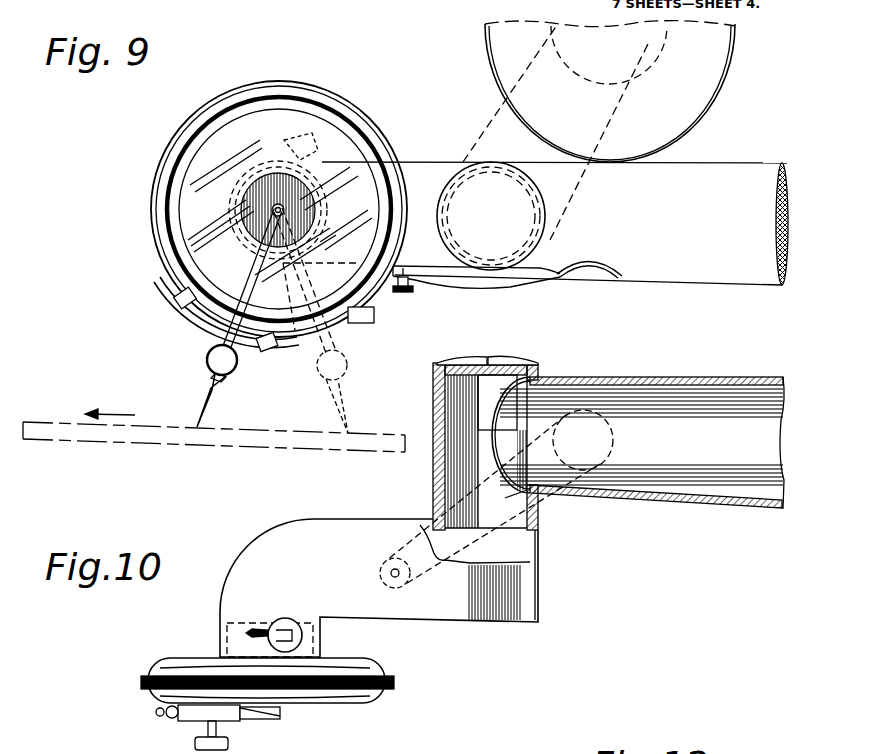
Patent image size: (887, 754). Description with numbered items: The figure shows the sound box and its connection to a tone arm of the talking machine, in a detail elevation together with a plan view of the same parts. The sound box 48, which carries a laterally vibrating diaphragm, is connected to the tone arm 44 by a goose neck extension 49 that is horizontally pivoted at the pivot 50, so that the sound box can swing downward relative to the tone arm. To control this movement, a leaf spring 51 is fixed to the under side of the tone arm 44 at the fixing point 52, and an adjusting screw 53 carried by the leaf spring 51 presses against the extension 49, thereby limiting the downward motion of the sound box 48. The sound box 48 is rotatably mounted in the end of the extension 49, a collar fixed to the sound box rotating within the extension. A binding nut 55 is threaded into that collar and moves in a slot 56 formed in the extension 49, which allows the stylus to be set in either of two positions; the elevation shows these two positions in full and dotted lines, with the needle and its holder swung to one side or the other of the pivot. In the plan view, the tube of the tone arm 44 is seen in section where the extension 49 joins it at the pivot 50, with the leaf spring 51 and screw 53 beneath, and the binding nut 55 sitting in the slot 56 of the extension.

In FIG. 9, the tone arm 44 is at (555, 223).
In FIG. 10, the tone arm 44 is at (638, 443).
In FIG. 9, the sound box 48 is at (272, 122).
In FIG. 9, the goose neck extension 49 is at (407, 172).
In FIG. 10, the goose neck extension 49 is at (318, 533).
In FIG. 9, the horizontal pivot 50 is at (512, 226).
In FIG. 10, the horizontal pivot 50 is at (485, 400).
In FIG. 9, the leaf spring 51 is at (495, 288).
In FIG. 10, the leaf spring 51 is at (505, 498).
In FIG. 9, the fixing point of leaf spring 52 is at (596, 280).
In FIG. 10, the fixing point of leaf spring 52 is at (499, 497).
In FIG. 9, the adjusting screw 53 is at (408, 292).
In FIG. 10, the adjusting screw 53 is at (403, 583).
In FIG. 10, the binding nut 55 is at (293, 642).
In FIG. 10, the slot 56 is at (245, 634).